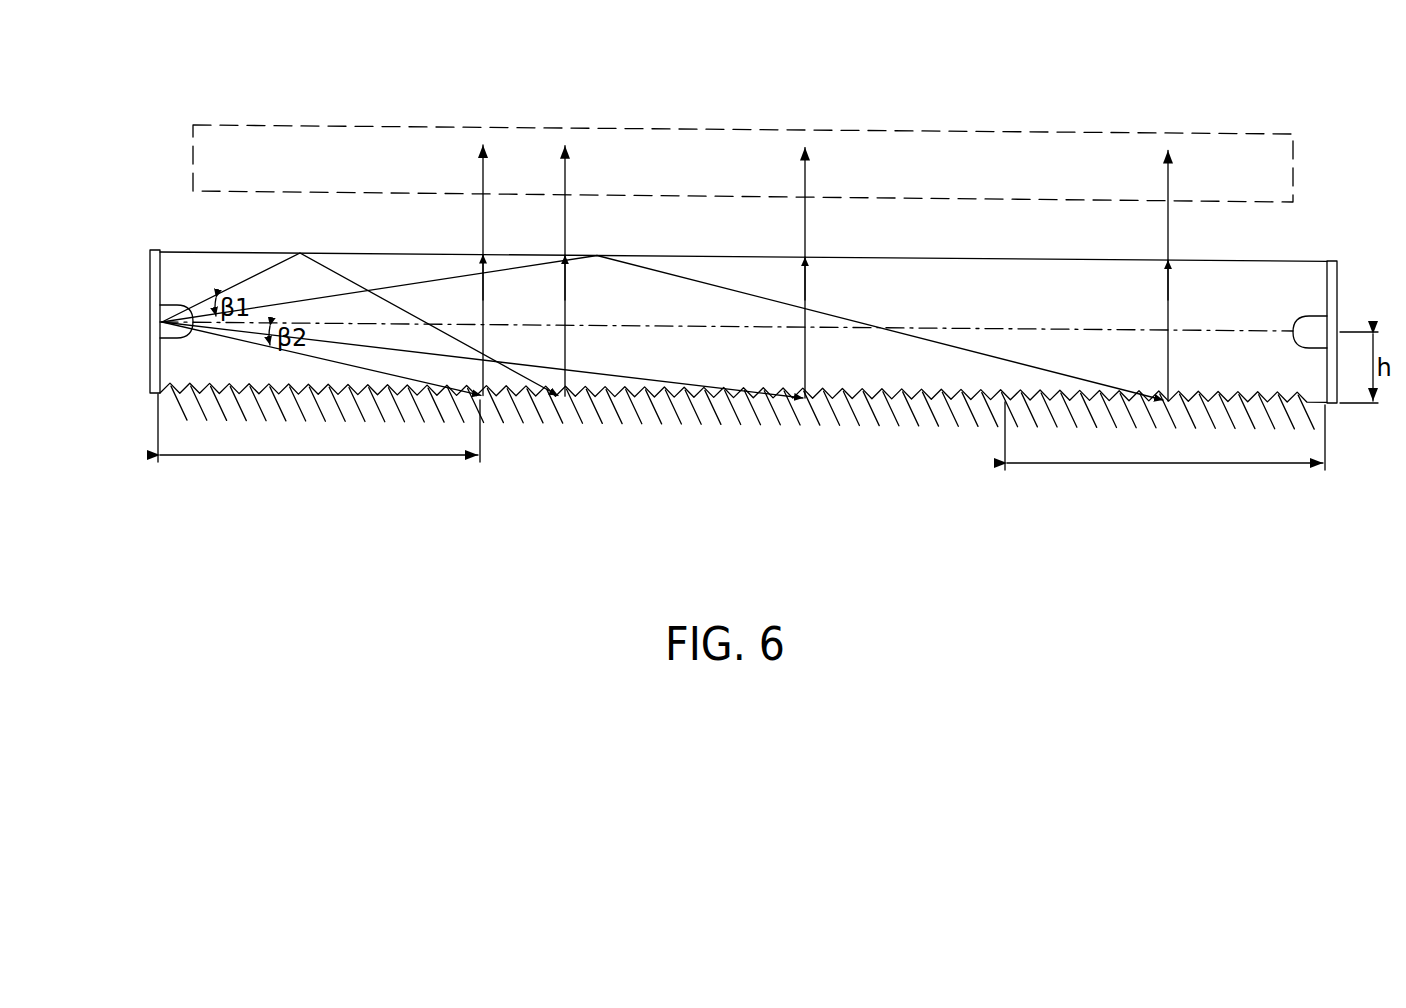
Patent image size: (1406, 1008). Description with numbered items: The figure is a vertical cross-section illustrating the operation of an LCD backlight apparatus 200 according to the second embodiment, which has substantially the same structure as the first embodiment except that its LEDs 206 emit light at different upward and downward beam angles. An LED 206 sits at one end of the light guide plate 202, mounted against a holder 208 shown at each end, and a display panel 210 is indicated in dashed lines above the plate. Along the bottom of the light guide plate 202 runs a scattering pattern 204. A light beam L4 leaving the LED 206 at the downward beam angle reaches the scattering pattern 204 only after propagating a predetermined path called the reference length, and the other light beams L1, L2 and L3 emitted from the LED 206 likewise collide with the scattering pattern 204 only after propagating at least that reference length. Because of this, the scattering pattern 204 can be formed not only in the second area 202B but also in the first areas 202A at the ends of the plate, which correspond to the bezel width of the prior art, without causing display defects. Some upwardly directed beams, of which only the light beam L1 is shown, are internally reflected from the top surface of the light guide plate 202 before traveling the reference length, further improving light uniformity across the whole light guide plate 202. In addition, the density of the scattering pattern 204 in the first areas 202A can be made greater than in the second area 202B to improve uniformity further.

The LCD backlight apparatus 200 is at (388, 47).
The light guide plate 202 is at (1299, 257).
The first areas 202A is at (227, 423).
The second area 202B is at (797, 436).
The scattering pattern 204 is at (587, 424).
The LED 206 is at (165, 330).
The light source housing / reflector plate 208 is at (155, 289).
The display panel 210 is at (1078, 132).
The light beam L1 is at (233, 287).
The light beam L2 is at (940, 345).
The light beam L3 is at (660, 410).
The light beam L4 is at (237, 340).